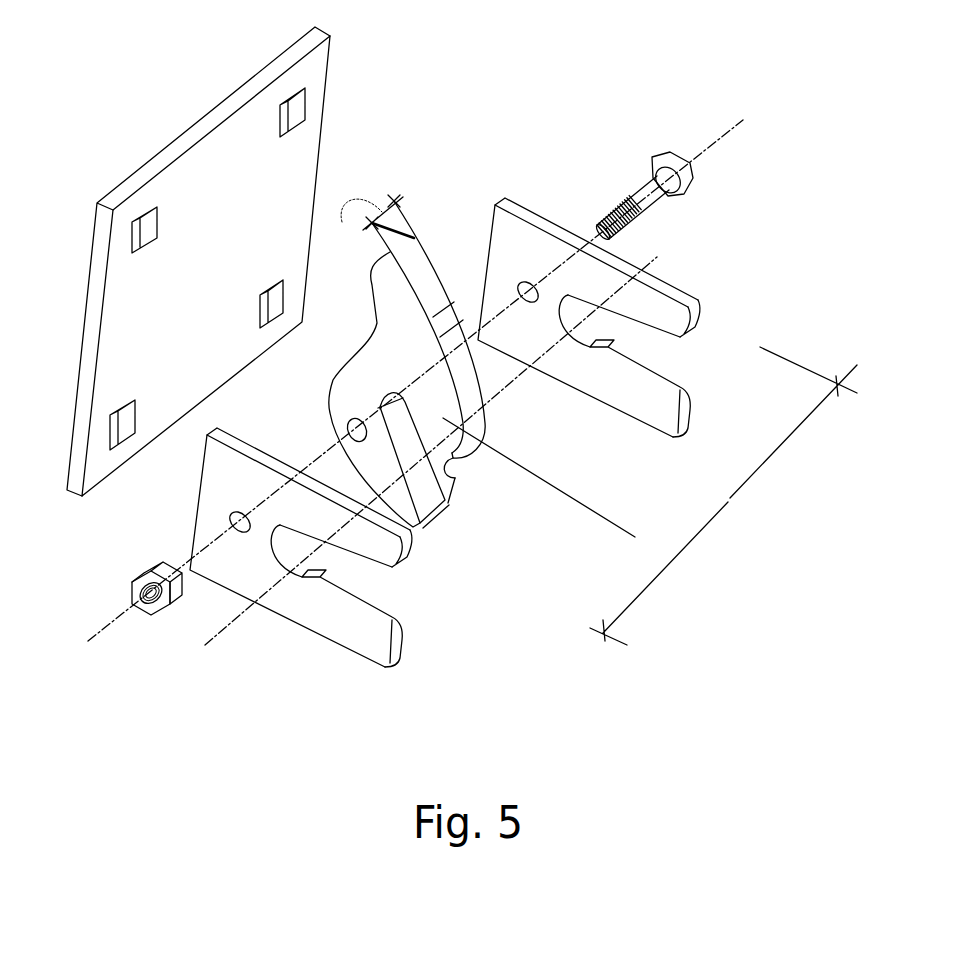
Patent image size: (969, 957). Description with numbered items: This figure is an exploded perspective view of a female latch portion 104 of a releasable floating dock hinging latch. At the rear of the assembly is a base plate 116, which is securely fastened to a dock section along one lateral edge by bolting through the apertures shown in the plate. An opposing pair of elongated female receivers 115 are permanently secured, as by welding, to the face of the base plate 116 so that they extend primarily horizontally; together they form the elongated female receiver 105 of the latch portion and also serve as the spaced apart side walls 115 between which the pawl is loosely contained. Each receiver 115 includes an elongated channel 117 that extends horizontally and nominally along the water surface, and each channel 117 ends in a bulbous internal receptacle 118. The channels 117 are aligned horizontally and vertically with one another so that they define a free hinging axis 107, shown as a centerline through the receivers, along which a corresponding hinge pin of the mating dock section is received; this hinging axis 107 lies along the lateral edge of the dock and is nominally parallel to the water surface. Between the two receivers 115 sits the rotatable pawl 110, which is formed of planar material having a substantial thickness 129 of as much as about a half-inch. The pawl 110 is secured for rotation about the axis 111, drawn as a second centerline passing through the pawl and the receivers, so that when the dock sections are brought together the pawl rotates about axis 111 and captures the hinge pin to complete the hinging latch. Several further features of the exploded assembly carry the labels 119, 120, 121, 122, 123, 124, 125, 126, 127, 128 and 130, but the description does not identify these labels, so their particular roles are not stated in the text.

The female latch portion 104 is at (373, 167).
The elongated female receiver 105 is at (683, 287).
The hinging axis 107 is at (651, 262).
The rotatable pawl 110 is at (431, 260).
The axis 111 is at (718, 137).
The elongated female receiver 115 is at (523, 207).
The base plate 116 is at (207, 113).
The elongated channel 117 is at (635, 349).
The bulbous internal receptacle 118 is at (585, 353).
The hook bore 119 is at (352, 424).
The bolt 120 is at (651, 150).
The nut 121 is at (135, 583).
The bracket bore 122 is at (533, 275).
The tongue end 123 is at (668, 382).
The slot upper edge 124 is at (692, 305).
The upper arm end 125 is at (687, 340).
The hook finger 126 is at (428, 495).
The hook tip 127 is at (447, 466).
The hook notch 128 is at (472, 423).
The thickness 129 is at (361, 224).
The spacing distance 130 is at (650, 496).